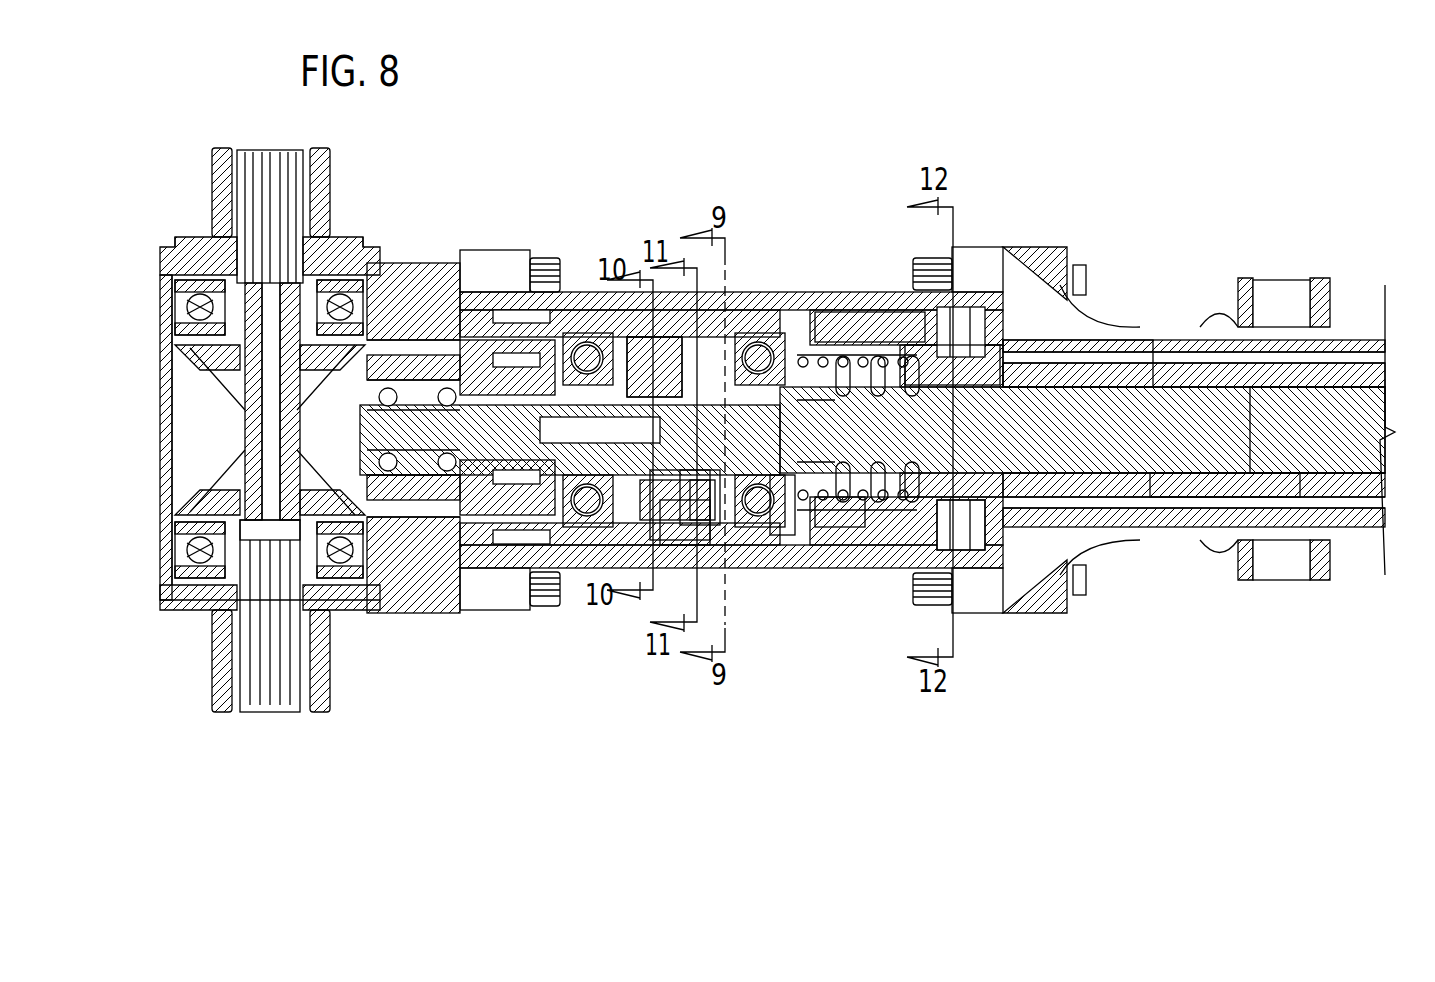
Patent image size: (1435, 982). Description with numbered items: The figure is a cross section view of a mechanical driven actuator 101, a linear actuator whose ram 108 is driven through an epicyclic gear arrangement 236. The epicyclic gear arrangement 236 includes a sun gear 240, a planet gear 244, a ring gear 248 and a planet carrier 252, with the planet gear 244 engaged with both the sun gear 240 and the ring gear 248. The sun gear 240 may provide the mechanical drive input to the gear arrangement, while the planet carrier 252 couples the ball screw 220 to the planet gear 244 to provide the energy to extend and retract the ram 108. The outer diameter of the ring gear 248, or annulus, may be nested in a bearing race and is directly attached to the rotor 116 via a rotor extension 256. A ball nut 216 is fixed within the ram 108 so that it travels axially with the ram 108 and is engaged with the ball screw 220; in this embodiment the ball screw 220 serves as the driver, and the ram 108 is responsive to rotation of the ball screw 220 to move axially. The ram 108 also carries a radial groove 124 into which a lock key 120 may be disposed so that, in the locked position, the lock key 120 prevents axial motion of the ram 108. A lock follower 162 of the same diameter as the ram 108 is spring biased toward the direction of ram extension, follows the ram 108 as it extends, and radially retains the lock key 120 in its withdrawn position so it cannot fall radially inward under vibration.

The mechanical driven actuator 101 is at (545, 755).
The ram 108 is at (1067, 350).
The rotor 116 is at (845, 315).
The lock key 120 is at (947, 350).
The radial groove 124 is at (965, 507).
The lock follower 162 is at (828, 513).
The ball nut 216 is at (1223, 483).
The ball screw 220 is at (1333, 450).
The epicyclic gear arrangement 236 is at (685, 540).
The sun gear 240 is at (635, 413).
The planet gear 244 is at (683, 560).
The ring gear 248 is at (690, 497).
The planet carrier 252 is at (700, 520).
The rotor extension 256 is at (781, 535).